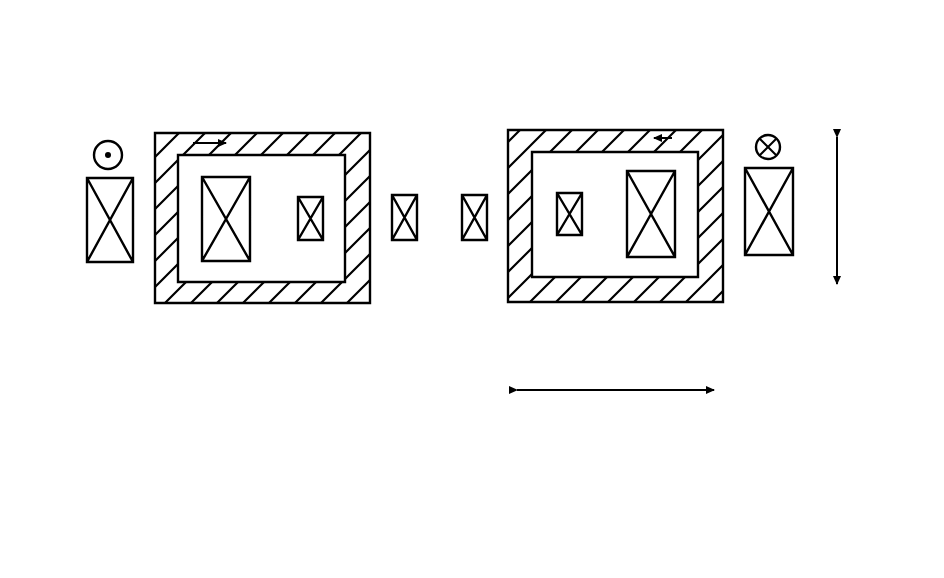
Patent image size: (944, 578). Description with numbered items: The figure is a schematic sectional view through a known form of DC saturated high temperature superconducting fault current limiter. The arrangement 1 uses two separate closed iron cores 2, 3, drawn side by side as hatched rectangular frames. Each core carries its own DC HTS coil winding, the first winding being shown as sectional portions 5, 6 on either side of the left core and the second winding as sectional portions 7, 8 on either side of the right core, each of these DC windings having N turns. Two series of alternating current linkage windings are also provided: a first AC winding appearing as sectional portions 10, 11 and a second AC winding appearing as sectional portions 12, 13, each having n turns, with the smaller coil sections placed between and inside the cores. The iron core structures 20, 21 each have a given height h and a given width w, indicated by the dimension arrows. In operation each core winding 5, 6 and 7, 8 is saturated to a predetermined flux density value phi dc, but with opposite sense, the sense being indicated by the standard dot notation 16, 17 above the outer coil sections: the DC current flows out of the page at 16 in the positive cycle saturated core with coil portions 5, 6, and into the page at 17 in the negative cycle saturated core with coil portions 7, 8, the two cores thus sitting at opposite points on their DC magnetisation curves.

The arrangement 1 is at (94, 394).
The closed iron core 2 is at (320, 306).
The closed iron core 3 is at (610, 303).
The sectional portion of first DC HTS coil winding 5 is at (100, 263).
The sectional portion of first DC HTS coil winding 6 is at (223, 262).
The sectional portion of second DC HTS coil winding 7 is at (768, 256).
The sectional portion of second DC HTS coil winding 8 is at (665, 257).
The sectional portion of first AC linkage winding 10 is at (307, 197).
The sectional portion of first AC linkage winding 11 is at (402, 195).
The sectional portion of second AC linkage winding 12 is at (468, 195).
The sectional portion of second AC linkage winding 13 is at (563, 193).
The dot notation 16 is at (96, 139).
The dot notation 17 is at (776, 134).
The iron core structure 20 is at (338, 80).
The iron core structure 21 is at (744, 68).